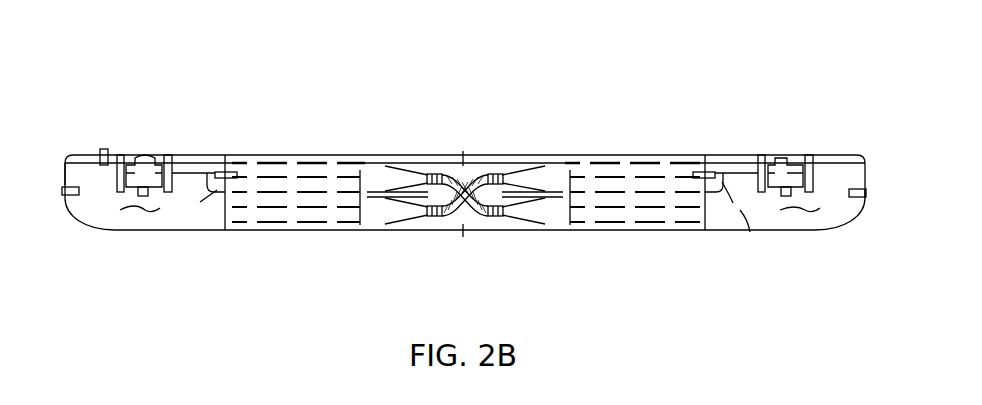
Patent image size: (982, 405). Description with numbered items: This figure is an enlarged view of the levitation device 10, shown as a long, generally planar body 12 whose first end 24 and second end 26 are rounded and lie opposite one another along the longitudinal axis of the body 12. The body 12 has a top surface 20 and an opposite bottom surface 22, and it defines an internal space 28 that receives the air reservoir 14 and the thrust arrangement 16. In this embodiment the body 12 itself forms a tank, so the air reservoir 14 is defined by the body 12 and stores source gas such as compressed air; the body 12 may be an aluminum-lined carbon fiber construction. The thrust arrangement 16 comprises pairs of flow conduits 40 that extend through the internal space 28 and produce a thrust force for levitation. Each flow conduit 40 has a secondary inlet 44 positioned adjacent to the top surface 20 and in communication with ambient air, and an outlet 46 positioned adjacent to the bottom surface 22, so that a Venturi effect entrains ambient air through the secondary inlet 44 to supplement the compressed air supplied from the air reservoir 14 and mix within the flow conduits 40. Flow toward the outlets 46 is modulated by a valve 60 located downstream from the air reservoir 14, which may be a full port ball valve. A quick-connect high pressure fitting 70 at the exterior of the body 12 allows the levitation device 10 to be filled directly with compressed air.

The levitation device 10 is at (376, 86).
The body 12 is at (93, 230).
The air reservoir 14 is at (137, 213).
The thrust arrangement 16 is at (404, 228).
The top surface 20 is at (654, 156).
The bottom surface 22 is at (767, 232).
The first end 24 is at (63, 170).
The second end 26 is at (857, 213).
The internal space 28 is at (798, 213).
The flow conduits 40 is at (272, 228).
The secondary inlet 44 is at (198, 160).
The outlet 46 is at (193, 208).
The valve 60 is at (143, 162).
The quick-connect high pressure fitting 70 is at (60, 195).